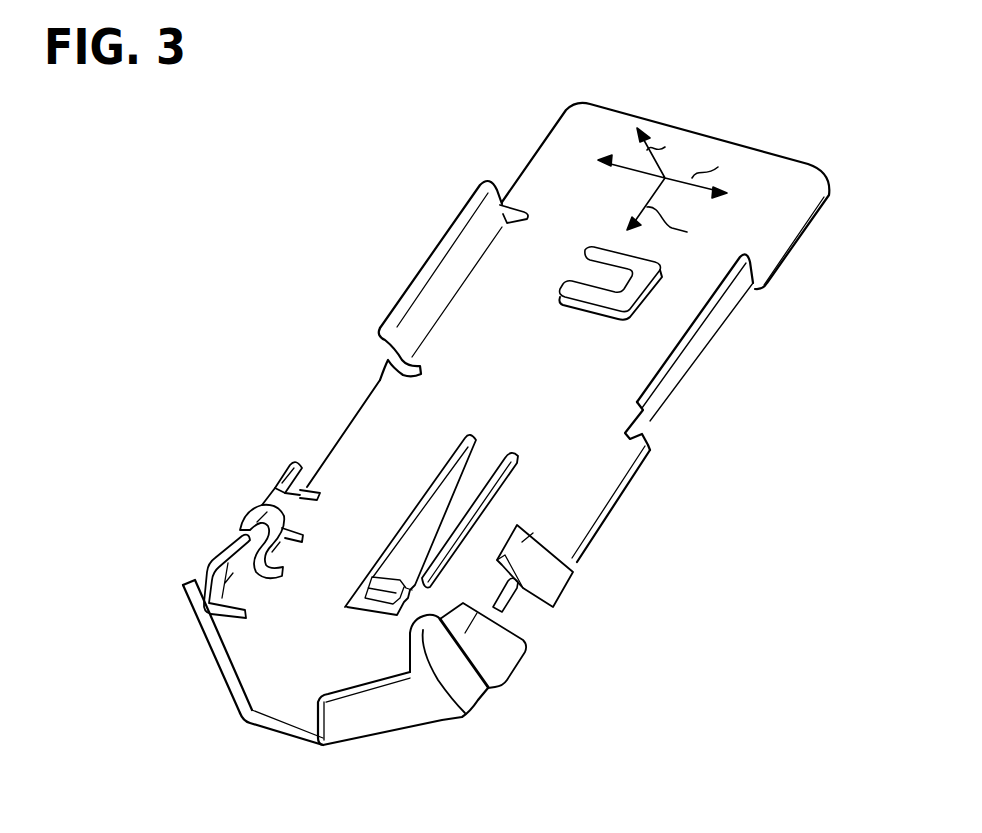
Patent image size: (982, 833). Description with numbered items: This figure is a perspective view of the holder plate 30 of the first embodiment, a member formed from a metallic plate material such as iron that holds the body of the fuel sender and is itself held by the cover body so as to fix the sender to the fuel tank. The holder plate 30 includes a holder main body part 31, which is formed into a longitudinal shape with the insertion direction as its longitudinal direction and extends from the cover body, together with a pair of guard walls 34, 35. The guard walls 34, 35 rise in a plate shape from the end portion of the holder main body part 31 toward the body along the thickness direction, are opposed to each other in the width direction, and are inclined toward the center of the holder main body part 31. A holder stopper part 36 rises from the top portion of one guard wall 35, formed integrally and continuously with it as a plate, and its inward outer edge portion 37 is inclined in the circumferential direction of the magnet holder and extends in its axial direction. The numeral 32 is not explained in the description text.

The holder plate 30 is at (790, 157).
The holder main body part 31 is at (560, 490).
The clip portion 32 is at (262, 540).
The guard wall 34 is at (208, 637).
The guard wall 35 is at (407, 707).
The holder stopper part 36 is at (458, 708).
The outer edge portion 37 is at (405, 640).